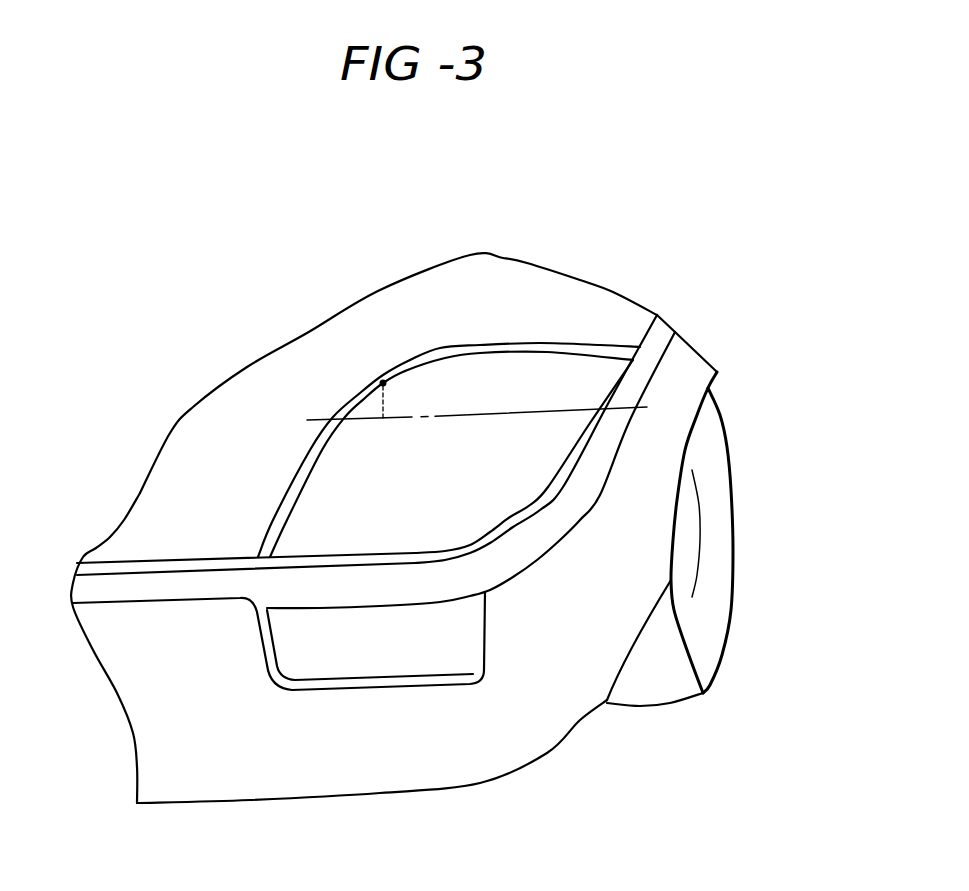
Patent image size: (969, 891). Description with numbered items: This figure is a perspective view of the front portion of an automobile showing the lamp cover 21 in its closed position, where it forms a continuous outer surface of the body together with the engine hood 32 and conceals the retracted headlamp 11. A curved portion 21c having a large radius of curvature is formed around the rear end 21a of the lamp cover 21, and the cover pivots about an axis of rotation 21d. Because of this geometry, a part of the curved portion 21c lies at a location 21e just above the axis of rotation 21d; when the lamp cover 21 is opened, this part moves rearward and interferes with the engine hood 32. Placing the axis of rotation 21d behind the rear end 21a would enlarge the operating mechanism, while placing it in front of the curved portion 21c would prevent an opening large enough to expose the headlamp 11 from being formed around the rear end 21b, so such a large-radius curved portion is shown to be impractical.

The headlamp 11 is at (488, 518).
The lamp cover 21 is at (513, 480).
The rear end of the lamp cover 21a is at (553, 363).
The rear end of the lamp cover 21b is at (387, 540).
The curved portion 21c is at (410, 372).
The axis of rotation 21d is at (677, 352).
The part of the curved portion above the axis of rotation 21e is at (392, 385).
The engine hood 32 is at (527, 297).